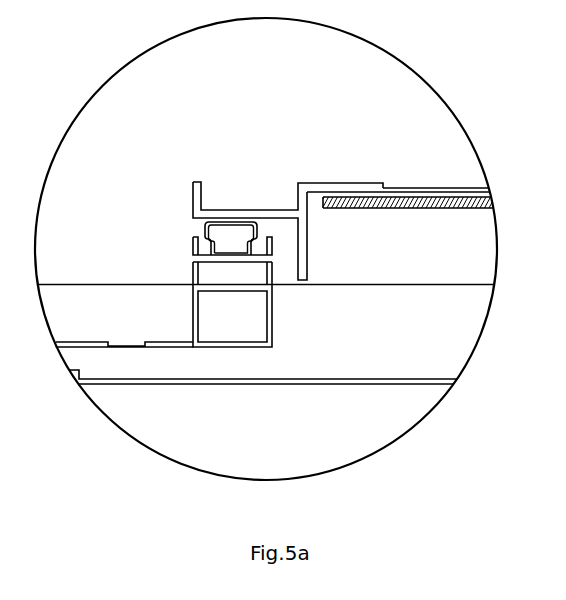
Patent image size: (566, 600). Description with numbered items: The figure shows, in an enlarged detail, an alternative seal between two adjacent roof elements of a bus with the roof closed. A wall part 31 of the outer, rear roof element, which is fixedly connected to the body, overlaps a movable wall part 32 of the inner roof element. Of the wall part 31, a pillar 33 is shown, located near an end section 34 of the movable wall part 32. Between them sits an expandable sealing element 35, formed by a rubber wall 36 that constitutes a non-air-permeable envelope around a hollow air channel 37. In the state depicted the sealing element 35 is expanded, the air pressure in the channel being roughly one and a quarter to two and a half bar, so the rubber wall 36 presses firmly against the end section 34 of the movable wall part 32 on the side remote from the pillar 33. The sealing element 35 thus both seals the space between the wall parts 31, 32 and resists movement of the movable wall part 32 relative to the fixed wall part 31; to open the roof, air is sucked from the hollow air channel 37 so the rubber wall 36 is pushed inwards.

The wall part 31 is at (63, 314).
The movable wall part 32 is at (480, 241).
The pillar 33 is at (253, 330).
The end section 34 is at (275, 218).
The expandable sealing element 35 is at (199, 228).
The rubber wall 36 is at (257, 226).
The hollow air channel 37 is at (230, 234).